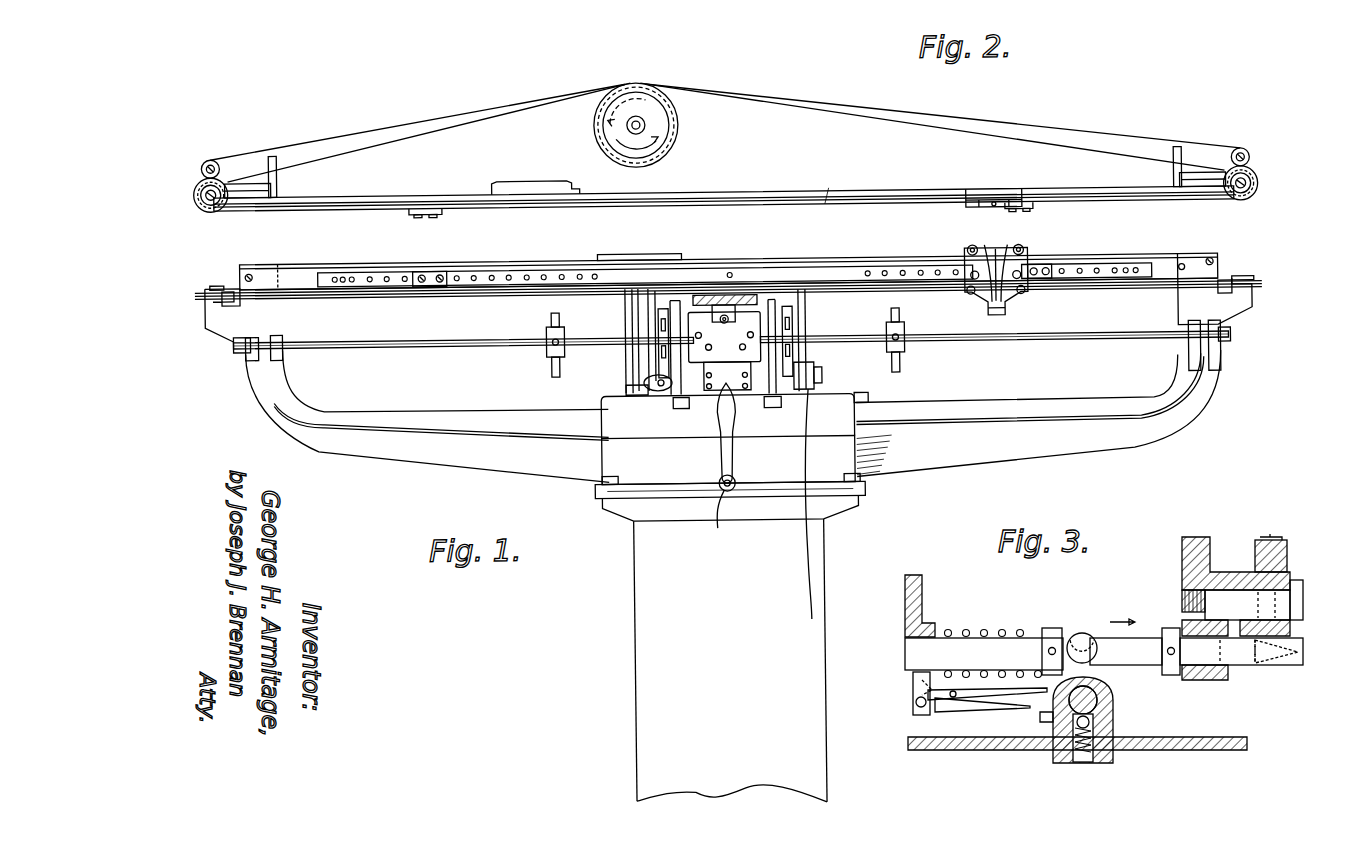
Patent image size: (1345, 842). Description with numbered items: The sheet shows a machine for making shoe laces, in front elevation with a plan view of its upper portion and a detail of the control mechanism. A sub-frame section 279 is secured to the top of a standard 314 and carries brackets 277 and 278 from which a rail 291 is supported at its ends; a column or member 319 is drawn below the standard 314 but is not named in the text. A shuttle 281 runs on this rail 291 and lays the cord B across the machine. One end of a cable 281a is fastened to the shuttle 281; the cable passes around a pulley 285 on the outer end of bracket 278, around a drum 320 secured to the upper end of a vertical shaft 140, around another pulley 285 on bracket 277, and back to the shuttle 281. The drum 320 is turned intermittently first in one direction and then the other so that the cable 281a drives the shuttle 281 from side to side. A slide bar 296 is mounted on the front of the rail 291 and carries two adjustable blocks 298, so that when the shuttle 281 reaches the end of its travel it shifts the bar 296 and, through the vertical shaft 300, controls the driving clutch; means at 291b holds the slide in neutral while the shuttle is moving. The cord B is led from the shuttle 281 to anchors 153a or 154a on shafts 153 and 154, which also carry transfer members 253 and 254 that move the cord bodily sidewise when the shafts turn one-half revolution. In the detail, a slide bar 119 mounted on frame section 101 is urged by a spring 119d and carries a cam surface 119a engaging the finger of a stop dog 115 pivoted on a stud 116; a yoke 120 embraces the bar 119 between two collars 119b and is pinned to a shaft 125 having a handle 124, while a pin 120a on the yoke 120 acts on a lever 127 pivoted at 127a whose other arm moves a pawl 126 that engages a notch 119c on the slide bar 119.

In FIG. 1, the frame section 101 is at (734, 415).
In FIG. 3, the stop dog 115 is at (1280, 548).
In FIG. 3, the stud 116 is at (1236, 604).
In FIG. 3, the slide bar 119 is at (1196, 642).
In FIG. 3, the cam surface 119a is at (1278, 665).
In FIG. 3, the collars 119b is at (1053, 628).
In FIG. 3, the notch or shoulder 119c is at (984, 622).
In FIG. 3, the spring 119d is at (968, 630).
In FIG. 3, the yoke 120 is at (1082, 640).
In FIG. 3, the pin 120a is at (1040, 716).
In FIG. 1, the handle 124 is at (731, 470).
In FIG. 1, the shaft 125 is at (764, 504).
In FIG. 3, the shaft 125 is at (1112, 692).
In FIG. 3, the detent or pawl 126 is at (913, 705).
In FIG. 3, the lever 127 is at (995, 692).
In FIG. 3, the pivot 127a is at (960, 706).
In FIG. 2, the vertically disposed shaft 140 is at (642, 124).
In FIG. 1, the vertically disposed shaft 140 is at (638, 300).
In FIG. 1, the shaft 153 is at (1097, 337).
In FIG. 1, the anchor 153a is at (900, 360).
In FIG. 1, the shaft 154 is at (403, 340).
In FIG. 1, the anchor 154a is at (548, 366).
In FIG. 1, the transfer member 253 is at (793, 330).
In FIG. 1, the transfer member 254 is at (656, 318).
In FIG. 2, the bracket 277 is at (1216, 170).
In FIG. 1, the bracket 277 is at (1038, 398).
In FIG. 2, the bracket 278 is at (240, 174).
In FIG. 1, the bracket 278 is at (427, 408).
In FIG. 1, the sub-frame section 279 is at (744, 478).
In FIG. 3, the sub-frame section 279 is at (1168, 737).
In FIG. 2, the shuttle 281 is at (1015, 179).
In FIG. 1, the shuttle 281 is at (1016, 250).
In FIG. 2, the cable 281a is at (400, 126).
In FIG. 1, the cable 281a is at (520, 292).
In FIG. 2, the pulley or roll 285 is at (213, 207).
In FIG. 1, the pulley or roll 285 is at (210, 284).
In FIG. 2, the rail 291 is at (793, 198).
In FIG. 1, the rail 291 is at (390, 260).
In FIG. 2, the holding means 291b is at (540, 172).
In FIG. 2, the slide bar 296 is at (831, 187).
In FIG. 1, the slide bar 296 is at (432, 260).
In FIG. 2, the blocks 298 is at (440, 211).
In FIG. 1, the blocks 298 is at (468, 260).
In FIG. 1, the vertical shaft 300 is at (627, 312).
In FIG. 1, the standard 314 is at (862, 503).
In FIG. 1, the pipe 319 is at (730, 661).
In FIG. 2, the drum 320 is at (633, 82).
In FIG. 1, the drum 320 is at (643, 248).
In FIG. 1, the cord B is at (985, 262).